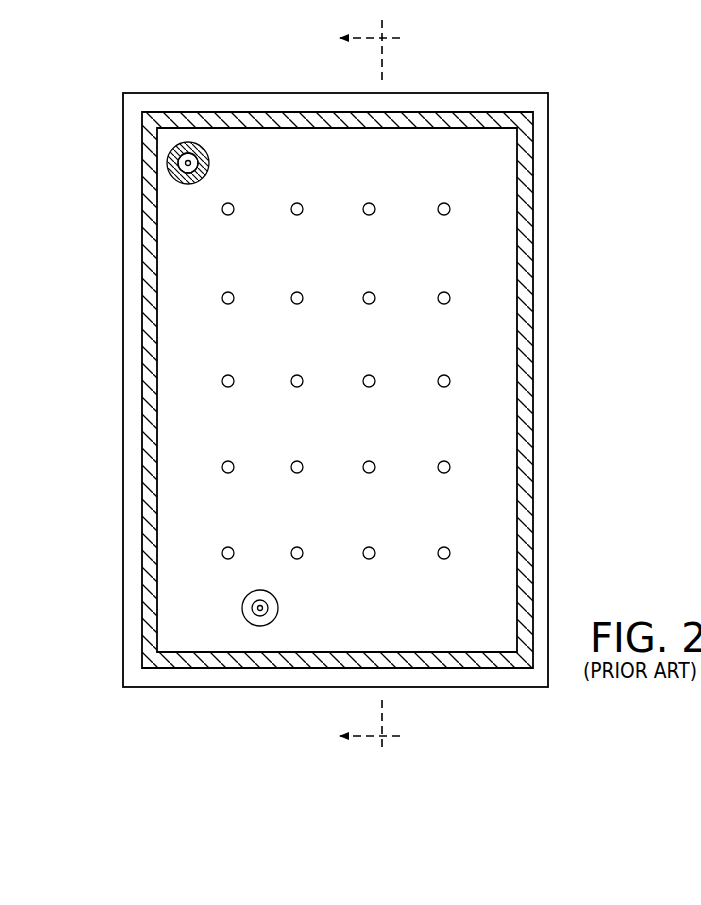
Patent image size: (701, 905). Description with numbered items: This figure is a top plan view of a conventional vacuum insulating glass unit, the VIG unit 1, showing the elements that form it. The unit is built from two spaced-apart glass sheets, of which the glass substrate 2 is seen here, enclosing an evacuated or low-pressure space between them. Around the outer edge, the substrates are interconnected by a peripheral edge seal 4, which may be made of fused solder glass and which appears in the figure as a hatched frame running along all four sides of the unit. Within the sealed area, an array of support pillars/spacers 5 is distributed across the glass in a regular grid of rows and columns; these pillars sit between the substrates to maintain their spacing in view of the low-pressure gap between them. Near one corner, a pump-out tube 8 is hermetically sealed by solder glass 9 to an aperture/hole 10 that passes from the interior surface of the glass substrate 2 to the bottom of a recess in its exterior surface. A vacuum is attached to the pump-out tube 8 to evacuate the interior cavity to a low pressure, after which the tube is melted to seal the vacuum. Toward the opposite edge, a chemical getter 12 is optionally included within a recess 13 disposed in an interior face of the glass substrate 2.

The VIG unit 1 is at (332, 399).
The glass substrate 2 is at (333, 103).
The peripheral edge seal 4 is at (250, 118).
The support pillars/spacers 5 is at (450, 297).
The pump-out tube 8 is at (166, 152).
The solder glass 9 is at (188, 185).
The aperture/hole 10 is at (182, 166).
The chemical getter 12 is at (258, 612).
The recess 13 is at (276, 606).